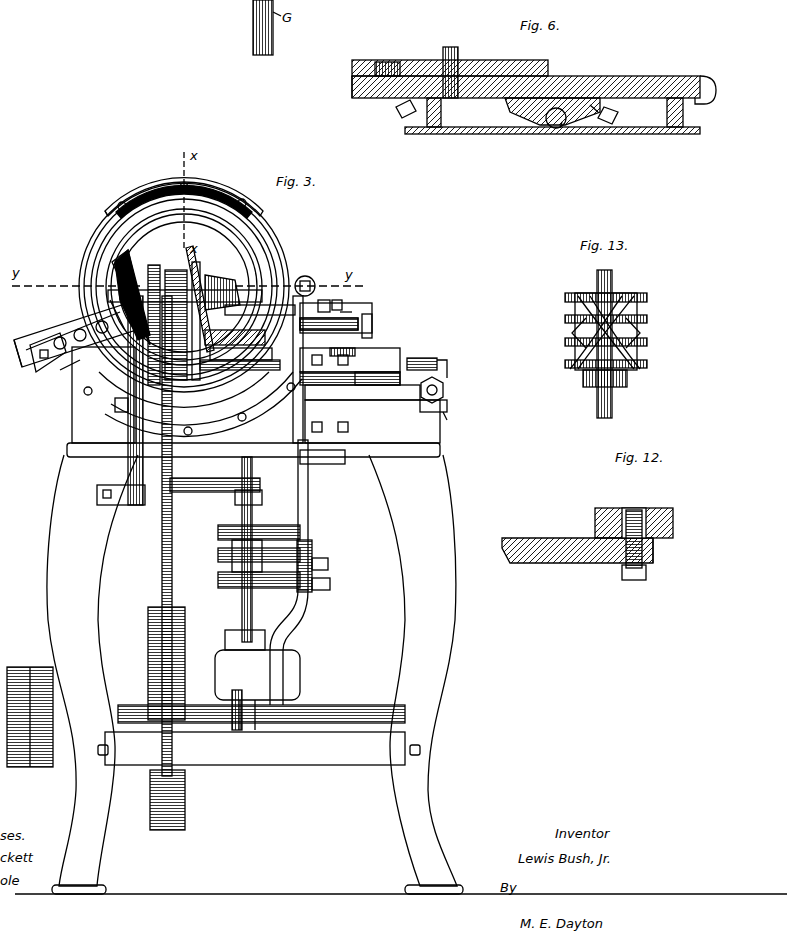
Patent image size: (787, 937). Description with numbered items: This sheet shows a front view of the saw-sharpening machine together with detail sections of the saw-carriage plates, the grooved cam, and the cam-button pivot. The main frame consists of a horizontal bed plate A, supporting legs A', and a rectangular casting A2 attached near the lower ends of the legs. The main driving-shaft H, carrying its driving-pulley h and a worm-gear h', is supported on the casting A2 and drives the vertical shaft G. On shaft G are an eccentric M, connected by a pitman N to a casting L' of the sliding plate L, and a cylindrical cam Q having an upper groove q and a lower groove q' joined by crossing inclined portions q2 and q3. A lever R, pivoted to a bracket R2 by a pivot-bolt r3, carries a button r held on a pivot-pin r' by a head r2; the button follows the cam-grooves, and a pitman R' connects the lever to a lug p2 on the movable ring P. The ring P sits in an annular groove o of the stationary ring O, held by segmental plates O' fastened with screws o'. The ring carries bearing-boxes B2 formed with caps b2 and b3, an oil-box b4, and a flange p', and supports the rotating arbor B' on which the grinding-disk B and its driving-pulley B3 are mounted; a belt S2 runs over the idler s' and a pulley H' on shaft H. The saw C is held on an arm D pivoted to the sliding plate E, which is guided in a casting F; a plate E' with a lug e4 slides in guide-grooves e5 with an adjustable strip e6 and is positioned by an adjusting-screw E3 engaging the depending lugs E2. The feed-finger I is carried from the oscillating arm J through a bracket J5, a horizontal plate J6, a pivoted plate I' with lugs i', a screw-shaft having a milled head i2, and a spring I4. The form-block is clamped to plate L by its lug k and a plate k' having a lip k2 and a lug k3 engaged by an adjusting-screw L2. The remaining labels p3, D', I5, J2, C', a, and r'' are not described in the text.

In FIG. 3, the movable ring P is at (283, 262).
In FIG. 3, the stationary ring O is at (193, 282).
In FIG. 3, the segmental plates O' is at (184, 193).
In FIG. 3, the screws o' is at (184, 188).
In FIG. 3, the annular groove o is at (95, 206).
In FIG. 3, the driving-pulley B3 is at (118, 270).
In FIG. 3, the oil-box b4 is at (112, 305).
In FIG. 3, the bearing-boxes B2 is at (150, 275).
In FIG. 3, the idler s' is at (169, 315).
In FIG. 3, the inclined bar p3 is at (188, 252).
In FIG. 3, the grinding-disk B is at (185, 274).
In FIG. 3, the rotating arbor B' is at (225, 287).
In FIG. 3, the feed-finger I is at (302, 316).
In FIG. 3, the saw C is at (260, 307).
In FIG. 3, the arm D is at (235, 339).
In FIG. 6, the arm D is at (450, 58).
In FIG. 3, the block plate D' is at (241, 347).
In FIG. 6, the block plate D' is at (387, 60).
In FIG. 3, the sliding plate E is at (240, 349).
In FIG. 6, the sliding plate E is at (534, 81).
In FIG. 3, the cap b3 is at (69, 335).
In FIG. 3, the bracket R2 is at (50, 335).
In FIG. 3, the inwardly-projecting flange p' is at (39, 352).
In FIG. 3, the cap b2 is at (62, 368).
In FIG. 3, the lug p2 is at (313, 280).
In FIG. 3, the plate I' is at (343, 312).
In FIG. 3, the milled head i2 is at (375, 326).
In FIG. 3, the spring I4 is at (324, 309).
In FIG. 3, the lug I5 is at (339, 301).
In FIG. 3, the lugs i' is at (346, 309).
In FIG. 3, the oscillating arm J is at (352, 372).
In FIG. 3, the standard or bracket J5 is at (347, 359).
In FIG. 3, the horizontal plate J6 is at (350, 382).
In FIG. 3, the bracket arm J2 is at (377, 376).
In FIG. 3, the sliding plate L is at (366, 408).
In FIG. 3, the lug or projection k is at (424, 385).
In FIG. 3, the lip or flange k2 is at (422, 352).
In FIG. 3, the adjusting-screw L2 is at (451, 370).
In FIG. 3, the lug k3 is at (448, 404).
In FIG. 3, the plate k' is at (453, 425).
In FIG. 3, the vertical arm or casting L' is at (372, 421).
In FIG. 3, the top or bed plate A is at (249, 402).
In FIG. 3, the lug C' is at (113, 421).
In FIG. 3, the supporting standards or legs A' is at (252, 670).
In FIG. 3, the rectangular casting A2 is at (259, 748).
In FIG. 3, the main driving-shaft H is at (261, 702).
In FIG. 3, the driving-pulley h is at (30, 697).
In FIG. 3, the belt S2 is at (160, 566).
In FIG. 3, the pulley H' is at (175, 718).
In FIG. 3, the worm-gear h' is at (243, 720).
In FIG. 3, the vertical shaft G is at (242, 500).
In FIG. 13, the vertical shaft G is at (613, 344).
In FIG. 3, the eccentric M is at (215, 484).
In FIG. 3, the pitman N is at (236, 492).
In FIG. 3, the upper cam-groove q is at (249, 533).
In FIG. 13, the upper cam-groove q is at (614, 304).
In FIG. 3, the cam Q is at (218, 556).
In FIG. 13, the cam Q is at (632, 368).
In FIG. 3, the lower cam-groove q' is at (250, 581).
In FIG. 13, the lower cam-groove q' is at (617, 350).
In FIG. 3, the block or button r is at (311, 561).
In FIG. 3, the pivot-bolt r3 is at (329, 564).
In FIG. 3, the head r2 is at (331, 584).
In FIG. 12, the head r2 is at (636, 512).
In FIG. 3, the pitman R' is at (314, 515).
In FIG. 6, the depending lugs E2 is at (337, 87).
In FIG. 6, the screw a is at (450, 48).
In FIG. 6, the guide plate or casting F is at (441, 118).
In FIG. 6, the plate E' is at (552, 115).
In FIG. 6, the adjusting-screw E3 is at (553, 128).
In FIG. 6, the lug e4 is at (565, 130).
In FIG. 6, the guide-grooves e5 is at (526, 112).
In FIG. 6, the adjustable strip e6 is at (594, 115).
In FIG. 13, the inclined groove portion q2 is at (568, 322).
In FIG. 13, the inclined groove portion q3 is at (572, 368).
In FIG. 12, the lever R is at (577, 541).
In FIG. 12, the pivot-pin r' is at (643, 523).
In FIG. 12, the block edge r'' is at (669, 550).